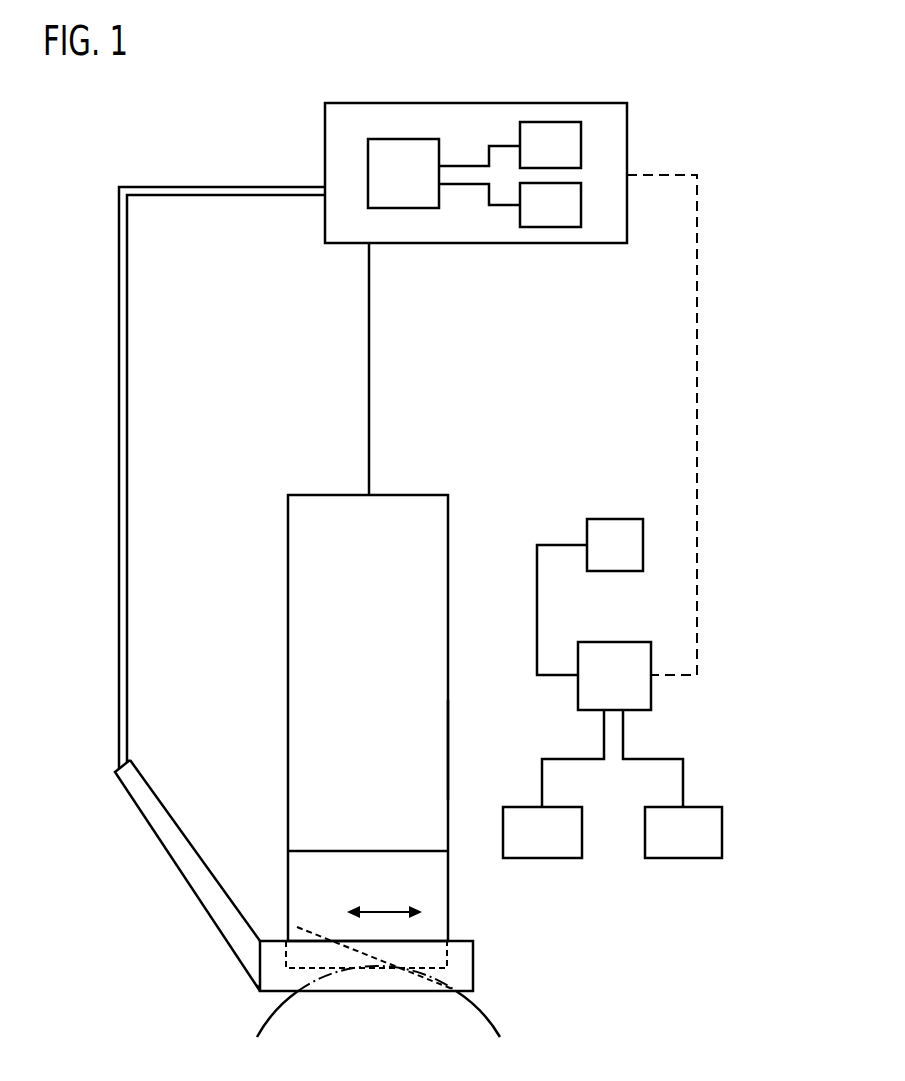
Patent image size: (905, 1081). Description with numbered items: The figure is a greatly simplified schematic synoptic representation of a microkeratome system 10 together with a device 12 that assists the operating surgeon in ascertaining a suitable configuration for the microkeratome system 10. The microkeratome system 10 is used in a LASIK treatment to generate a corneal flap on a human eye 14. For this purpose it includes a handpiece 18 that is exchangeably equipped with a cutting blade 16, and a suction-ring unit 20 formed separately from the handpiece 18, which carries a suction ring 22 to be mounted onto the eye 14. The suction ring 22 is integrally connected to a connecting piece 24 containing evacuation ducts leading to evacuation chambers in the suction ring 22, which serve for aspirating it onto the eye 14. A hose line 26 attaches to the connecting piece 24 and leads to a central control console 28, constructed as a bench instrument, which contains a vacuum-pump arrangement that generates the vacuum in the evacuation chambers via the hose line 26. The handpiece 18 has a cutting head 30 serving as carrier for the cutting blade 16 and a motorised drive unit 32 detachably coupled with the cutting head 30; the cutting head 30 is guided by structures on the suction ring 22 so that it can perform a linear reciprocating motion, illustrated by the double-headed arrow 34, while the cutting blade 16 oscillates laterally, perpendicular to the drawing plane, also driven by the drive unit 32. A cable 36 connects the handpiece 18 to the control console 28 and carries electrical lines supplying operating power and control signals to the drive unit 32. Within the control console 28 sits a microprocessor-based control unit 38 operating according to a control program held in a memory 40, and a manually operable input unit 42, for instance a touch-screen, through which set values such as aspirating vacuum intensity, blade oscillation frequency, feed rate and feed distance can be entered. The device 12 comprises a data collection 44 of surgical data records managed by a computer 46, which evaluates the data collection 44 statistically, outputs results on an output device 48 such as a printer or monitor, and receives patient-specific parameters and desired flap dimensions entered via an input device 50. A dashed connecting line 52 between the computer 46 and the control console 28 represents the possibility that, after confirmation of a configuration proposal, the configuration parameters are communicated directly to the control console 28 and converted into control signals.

The microkeratome system 10 is at (106, 224).
The device 12 is at (682, 699).
The human eye 14 is at (485, 1010).
The cutting blade 16 is at (298, 928).
The handpiece 18 is at (448, 523).
The suction-ring unit 20 is at (258, 990).
The suction ring 22 is at (468, 967).
The connecting piece 24 is at (160, 813).
The hose line 26 is at (120, 420).
The control console 28 is at (473, 103).
The cutting head 30 is at (438, 885).
The drive unit 32 is at (438, 738).
The double-headed arrow 34 is at (385, 911).
The cable 36 is at (370, 333).
The control unit 38 is at (408, 139).
The memory 40 is at (550, 122).
The input unit 42 is at (548, 228).
The data collection 44 is at (615, 519).
The computer 46 is at (613, 642).
The output device 48 is at (542, 859).
The input device 50 is at (682, 859).
The dashed connecting line 52 is at (697, 380).